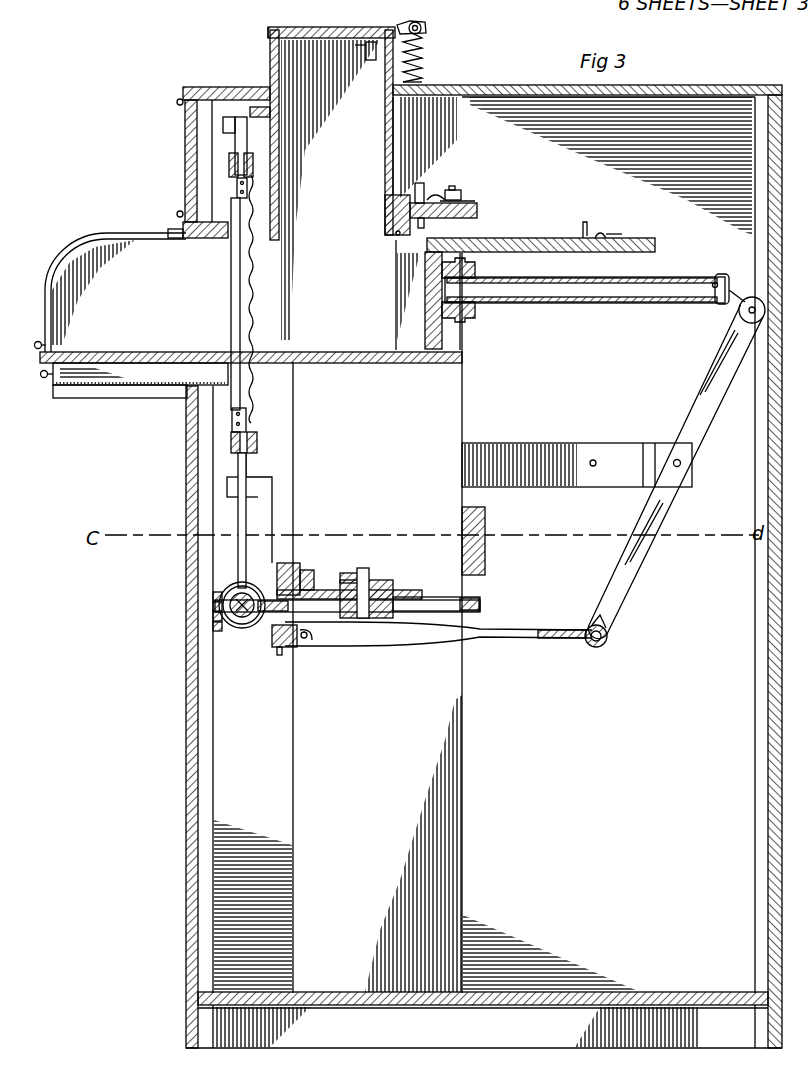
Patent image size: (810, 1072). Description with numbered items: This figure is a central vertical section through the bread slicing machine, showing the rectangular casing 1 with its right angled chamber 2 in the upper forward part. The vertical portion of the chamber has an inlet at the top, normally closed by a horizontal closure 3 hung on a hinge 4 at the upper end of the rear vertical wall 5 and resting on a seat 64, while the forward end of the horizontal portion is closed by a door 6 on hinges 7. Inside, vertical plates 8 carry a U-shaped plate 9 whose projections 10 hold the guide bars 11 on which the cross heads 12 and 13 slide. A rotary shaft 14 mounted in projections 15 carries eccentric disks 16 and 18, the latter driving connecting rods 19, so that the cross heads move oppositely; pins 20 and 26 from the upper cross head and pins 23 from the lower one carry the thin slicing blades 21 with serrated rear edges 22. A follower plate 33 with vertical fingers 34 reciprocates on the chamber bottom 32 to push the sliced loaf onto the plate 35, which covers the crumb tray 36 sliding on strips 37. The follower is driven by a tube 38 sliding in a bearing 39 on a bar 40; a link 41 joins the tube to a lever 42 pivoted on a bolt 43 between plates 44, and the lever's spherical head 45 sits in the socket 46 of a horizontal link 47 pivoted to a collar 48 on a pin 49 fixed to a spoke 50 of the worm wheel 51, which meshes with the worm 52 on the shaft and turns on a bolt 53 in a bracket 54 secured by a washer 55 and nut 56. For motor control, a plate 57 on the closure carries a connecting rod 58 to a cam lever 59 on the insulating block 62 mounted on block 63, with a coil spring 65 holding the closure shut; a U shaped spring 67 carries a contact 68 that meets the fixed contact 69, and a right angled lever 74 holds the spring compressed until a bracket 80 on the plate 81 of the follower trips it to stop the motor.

The casing 1 is at (767, 742).
The right angled chamber 2 is at (366, 511).
The closure or door 3 is at (360, 38).
The hinge 4 is at (372, 50).
The rear vertical wall 5 is at (387, 160).
The closure or door 6 is at (90, 233).
The hinges 7 is at (180, 232).
The vertical plates 8 is at (468, 398).
The vertical U-shaped plate 9 is at (287, 512).
The horizontal projections 10 is at (230, 117).
The guide bars 11 is at (254, 141).
The cross head 12 is at (253, 167).
The cross head 13 is at (256, 440).
The rotary shaft 14 is at (213, 606).
The projections 15 is at (213, 597).
The eccentric disks 16 is at (240, 627).
The eccentric disks 18 is at (220, 590).
The connecting rods 19 is at (238, 549).
The pins 20 is at (248, 187).
The slicing blades 21 is at (250, 250).
The rear edges 22 is at (256, 272).
The vertical pins 23 is at (232, 441).
The pins 26 is at (235, 140).
The horizontal bottom 32 is at (345, 352).
The follower plate 33 is at (425, 302).
The vertical fingers 34 is at (406, 268).
The horizontal plate 35 is at (150, 352).
The crumb tray 36 is at (122, 380).
The strips 37 is at (133, 388).
The tube 38 is at (622, 290).
The bearing 39 is at (527, 303).
The horizontal bar 40 is at (463, 319).
The link 41 is at (727, 302).
The lever 42 is at (722, 349).
The horizontal bolt 43 is at (682, 464).
The horizontal plates 44 is at (630, 445).
The spherical shaped head 45 is at (598, 622).
The socket 46 is at (592, 645).
The horizontal link 47 is at (515, 640).
The collar 48 is at (248, 612).
The vertical pin 49 is at (285, 642).
The spokes 50 is at (322, 628).
The worm wheel 51 is at (450, 598).
The worm 52 is at (232, 640).
The vertical bolt 53 is at (368, 575).
The right angled bracket 54 is at (340, 592).
The washer 55 is at (392, 590).
The nut 56 is at (352, 575).
The horizontal plate 57 is at (424, 28).
The connecting rod 58 is at (420, 36).
The cam lever 59 is at (443, 184).
The block of insulation material 62 is at (472, 216).
The horizontal block 63 is at (386, 216).
The seat 64 is at (268, 30).
The coil spring 65 is at (418, 75).
The U shaped spring 67 is at (419, 190).
The vertical contact 68 is at (458, 194).
The contact 69 is at (462, 200).
The right angled lever 74 is at (434, 230).
The right angled bracket 80 is at (585, 224).
The horizontal plate 81 is at (553, 238).